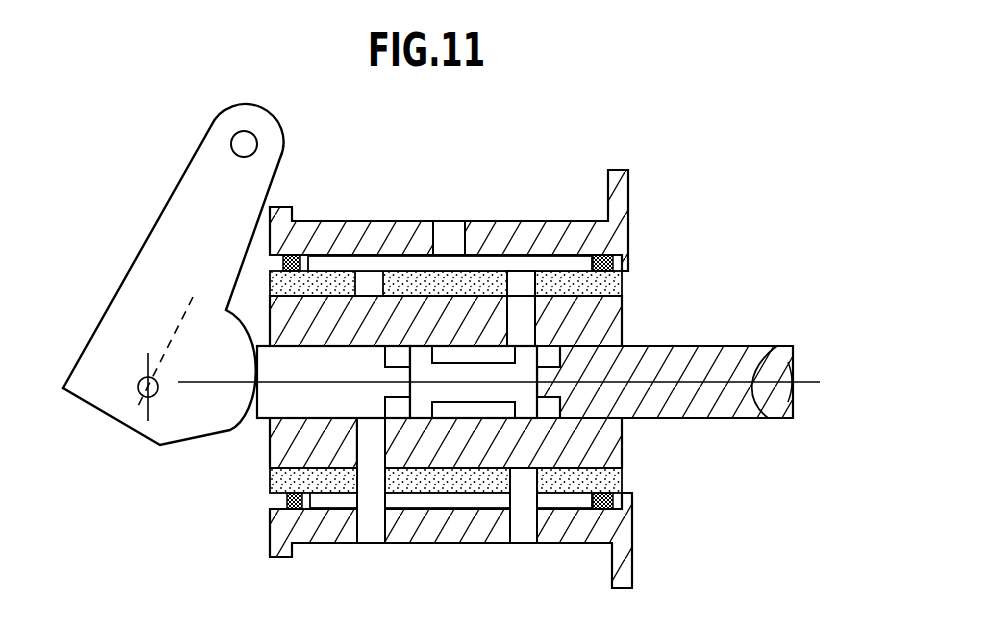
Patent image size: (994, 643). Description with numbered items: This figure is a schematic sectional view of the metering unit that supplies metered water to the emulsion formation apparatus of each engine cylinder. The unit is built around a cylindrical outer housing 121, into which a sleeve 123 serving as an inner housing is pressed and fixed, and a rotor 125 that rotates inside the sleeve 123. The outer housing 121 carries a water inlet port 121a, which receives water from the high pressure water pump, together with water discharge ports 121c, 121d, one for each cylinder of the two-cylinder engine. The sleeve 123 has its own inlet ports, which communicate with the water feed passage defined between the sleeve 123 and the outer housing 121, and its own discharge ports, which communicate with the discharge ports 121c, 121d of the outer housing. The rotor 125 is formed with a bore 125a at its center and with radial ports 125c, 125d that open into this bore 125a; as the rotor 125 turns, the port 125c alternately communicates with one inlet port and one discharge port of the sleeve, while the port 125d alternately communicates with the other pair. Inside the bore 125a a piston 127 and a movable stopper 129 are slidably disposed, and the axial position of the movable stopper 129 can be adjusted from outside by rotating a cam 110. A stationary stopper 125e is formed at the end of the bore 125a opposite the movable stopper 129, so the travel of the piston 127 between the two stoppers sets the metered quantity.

The cam 110 is at (187, 425).
The cylindrical outer housing 121 is at (610, 232).
The water inlet port 121a is at (448, 230).
The water discharge port 121c is at (372, 532).
The water discharge port 121d is at (523, 533).
The sleeve 123 is at (522, 288).
The rotor 125 is at (620, 341).
The bore 125a is at (452, 357).
The port 125c is at (367, 445).
The port 125d is at (522, 333).
The stationary stopper 125e is at (556, 384).
The piston 127 is at (478, 387).
The movable stopper 129 is at (298, 408).